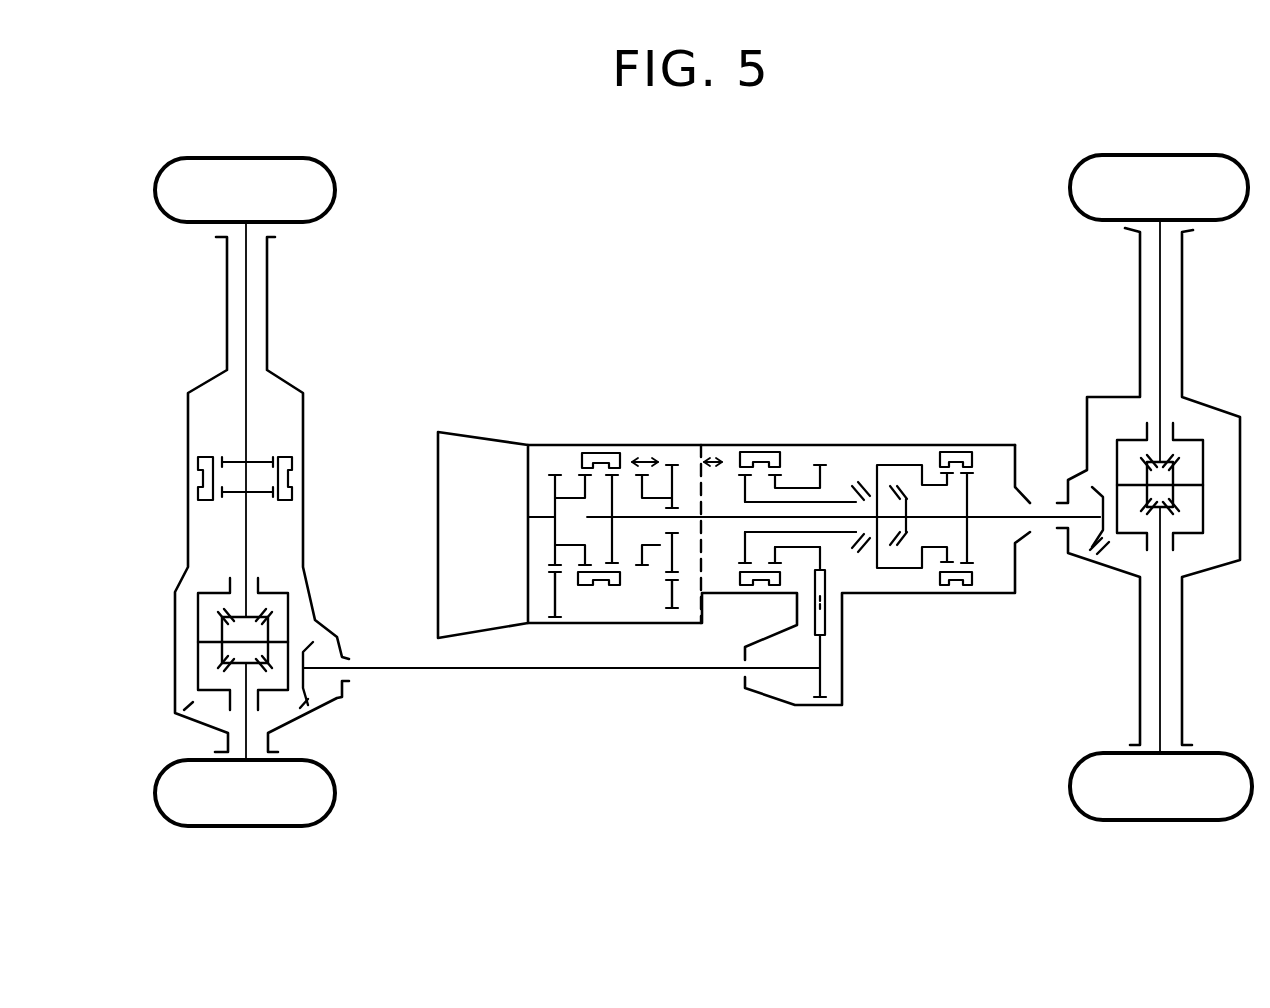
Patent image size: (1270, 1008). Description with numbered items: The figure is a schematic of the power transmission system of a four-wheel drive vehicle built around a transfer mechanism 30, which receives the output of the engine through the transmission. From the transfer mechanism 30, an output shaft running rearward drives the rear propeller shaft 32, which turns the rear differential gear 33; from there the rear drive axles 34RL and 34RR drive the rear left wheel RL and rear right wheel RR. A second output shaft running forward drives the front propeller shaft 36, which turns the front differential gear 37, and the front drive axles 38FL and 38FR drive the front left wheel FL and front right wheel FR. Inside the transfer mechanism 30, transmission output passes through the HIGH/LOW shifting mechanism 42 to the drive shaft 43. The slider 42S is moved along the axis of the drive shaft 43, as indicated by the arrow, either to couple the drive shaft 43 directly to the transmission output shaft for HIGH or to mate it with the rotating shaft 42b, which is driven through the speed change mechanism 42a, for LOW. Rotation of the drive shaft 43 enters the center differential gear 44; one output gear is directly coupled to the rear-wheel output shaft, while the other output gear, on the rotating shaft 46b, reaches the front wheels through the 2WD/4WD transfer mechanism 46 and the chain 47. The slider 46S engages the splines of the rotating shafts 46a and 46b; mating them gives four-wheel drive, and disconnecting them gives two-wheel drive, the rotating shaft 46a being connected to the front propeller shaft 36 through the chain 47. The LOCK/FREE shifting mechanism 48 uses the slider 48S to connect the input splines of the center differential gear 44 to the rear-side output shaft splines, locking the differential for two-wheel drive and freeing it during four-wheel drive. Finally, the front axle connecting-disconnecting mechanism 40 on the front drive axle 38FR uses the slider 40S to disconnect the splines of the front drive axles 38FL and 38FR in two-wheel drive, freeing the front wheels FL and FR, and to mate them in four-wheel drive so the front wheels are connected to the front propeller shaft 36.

The transfer mechanism 30 is at (644, 442).
The rear propeller shaft 32 is at (1045, 518).
The rear differential gear 33 is at (1124, 544).
The rear drive axle 34RR is at (1160, 263).
The rear drive axle 34RL is at (1160, 675).
The front propeller shaft 36 is at (520, 670).
The front differential gear 37 is at (298, 616).
The front drive axle 38FR is at (247, 298).
The front drive axle 38FL is at (247, 745).
The front axle connecting-disconnecting mechanism 40 is at (278, 430).
The slider 40S is at (291, 477).
The HIGH/LOW shifting mechanism 42 is at (565, 468).
The slider 42S is at (597, 453).
The speed change mechanism 42a is at (585, 603).
The rotating shaft 42b is at (660, 545).
The drive shaft 43 is at (686, 517).
The center differential gear 44 is at (862, 468).
The 2WD/4WD transfer mechanism 46 is at (793, 468).
The slider 46S is at (763, 452).
The rotating shaft 46a is at (800, 549).
The rotating shaft 46b is at (843, 533).
The chain 47 is at (827, 620).
The LOCK/FREE shifting mechanism 48 is at (931, 456).
The slider 48S is at (958, 452).
The front right wheel FR is at (336, 190).
The front left wheel FL is at (336, 792).
The rear right wheel RR is at (1070, 188).
The rear left wheel RL is at (1088, 782).